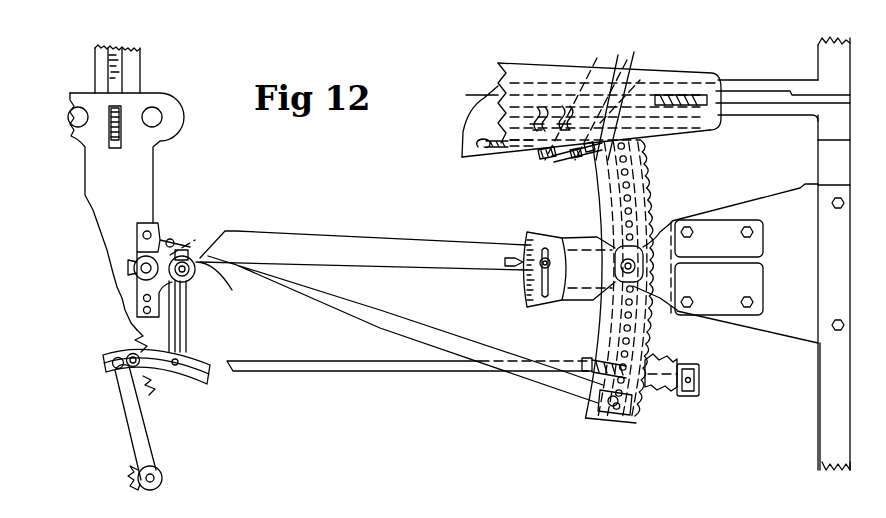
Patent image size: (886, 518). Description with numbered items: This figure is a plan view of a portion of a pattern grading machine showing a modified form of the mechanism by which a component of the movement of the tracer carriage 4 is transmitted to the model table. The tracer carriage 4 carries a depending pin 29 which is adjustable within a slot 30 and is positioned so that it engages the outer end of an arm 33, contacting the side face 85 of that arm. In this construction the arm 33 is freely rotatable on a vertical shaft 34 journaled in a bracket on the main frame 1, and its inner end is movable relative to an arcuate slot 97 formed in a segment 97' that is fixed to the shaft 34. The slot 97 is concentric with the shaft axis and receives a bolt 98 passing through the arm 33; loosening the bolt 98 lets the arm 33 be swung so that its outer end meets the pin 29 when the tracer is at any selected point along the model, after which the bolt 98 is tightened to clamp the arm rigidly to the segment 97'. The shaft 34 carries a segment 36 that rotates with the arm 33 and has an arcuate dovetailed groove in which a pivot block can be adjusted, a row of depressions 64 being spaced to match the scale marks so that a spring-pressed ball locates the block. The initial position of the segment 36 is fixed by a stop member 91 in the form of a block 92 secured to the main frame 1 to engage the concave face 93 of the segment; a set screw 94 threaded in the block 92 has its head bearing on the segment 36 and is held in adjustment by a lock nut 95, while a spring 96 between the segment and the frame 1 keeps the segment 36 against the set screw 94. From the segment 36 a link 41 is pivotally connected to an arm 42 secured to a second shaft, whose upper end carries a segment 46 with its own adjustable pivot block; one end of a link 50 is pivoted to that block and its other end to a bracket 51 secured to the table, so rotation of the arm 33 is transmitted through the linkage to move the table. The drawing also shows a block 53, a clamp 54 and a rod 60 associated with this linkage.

The main frame 1 is at (827, 154).
The tracer carriage 4 is at (148, 164).
The depending pin 29 is at (189, 275).
The slot 30 is at (186, 249).
The arm 33 is at (367, 245).
The rotatable vertical shaft 34 is at (652, 229).
The segment 36 is at (642, 185).
The link 41 is at (313, 302).
The arm 42 is at (181, 329).
The segment 46 is at (199, 384).
The link 50 is at (140, 421).
The bracket 51 is at (139, 486).
The slide block 53 is at (640, 416).
The clamp 54 is at (670, 364).
The rod 60 is at (402, 373).
The depressions 64 is at (614, 213).
The side face 85 is at (215, 280).
The stop member 91 is at (570, 162).
The block 92 is at (478, 130).
The concave face 93 is at (612, 85).
The set screw 94 is at (586, 157).
The lock nut 95 is at (562, 158).
The spring 96 is at (496, 148).
The arcuate slot 97 is at (545, 288).
The segment 97' is at (589, 288).
The bolt 98 is at (521, 273).